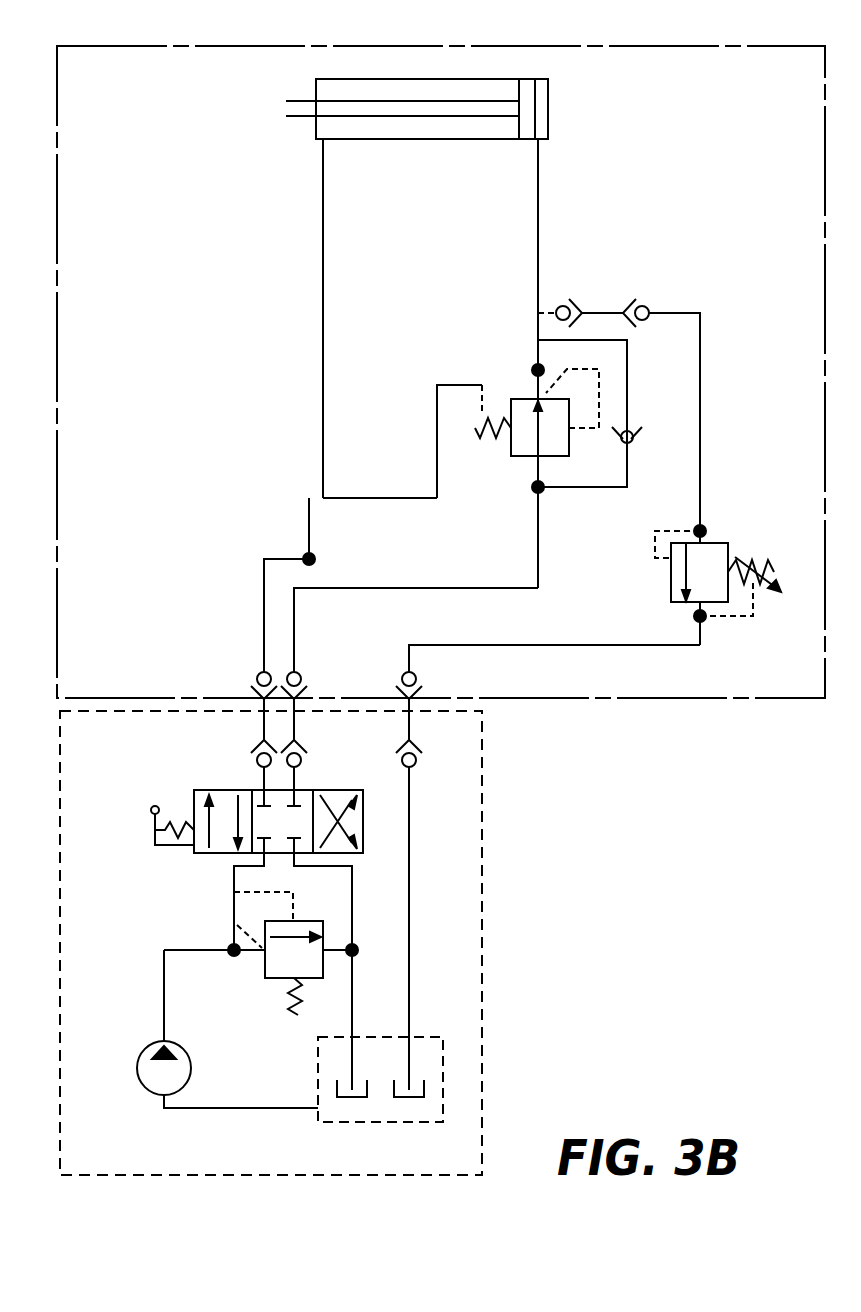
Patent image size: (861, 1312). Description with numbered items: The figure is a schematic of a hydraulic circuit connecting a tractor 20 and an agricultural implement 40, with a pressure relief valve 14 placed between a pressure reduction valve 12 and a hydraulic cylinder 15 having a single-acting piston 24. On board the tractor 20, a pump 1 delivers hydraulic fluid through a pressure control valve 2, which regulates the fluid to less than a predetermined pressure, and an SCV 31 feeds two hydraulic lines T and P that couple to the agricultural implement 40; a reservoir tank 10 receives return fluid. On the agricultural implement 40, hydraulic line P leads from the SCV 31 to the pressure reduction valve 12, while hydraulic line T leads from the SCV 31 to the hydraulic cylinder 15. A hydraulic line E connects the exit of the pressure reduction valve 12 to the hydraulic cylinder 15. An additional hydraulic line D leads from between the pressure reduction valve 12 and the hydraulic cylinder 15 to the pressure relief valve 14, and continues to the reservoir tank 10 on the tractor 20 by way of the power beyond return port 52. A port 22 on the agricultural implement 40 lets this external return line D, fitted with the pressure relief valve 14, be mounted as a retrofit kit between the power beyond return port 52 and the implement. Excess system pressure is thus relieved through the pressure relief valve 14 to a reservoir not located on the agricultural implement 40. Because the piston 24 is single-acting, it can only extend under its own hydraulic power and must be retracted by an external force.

The agricultural implement 40 is at (575, 46).
The tractor 20 is at (60, 1125).
The hydraulic cylinder 15 is at (373, 142).
The single-acting piston 24 is at (541, 110).
The port 22 is at (604, 313).
The pressure reduction valve 12 is at (517, 398).
The pressure relief valve 14 is at (671, 585).
The power beyond return port 52 is at (409, 729).
The SCV 31 is at (212, 854).
The pressure control valve 2 is at (265, 965).
The pump 1 is at (137, 1068).
The reservoir tank 10 is at (443, 1088).
The hydraulic line E is at (539, 228).
The hydraulic line T is at (264, 604).
The hydraulic line P is at (383, 589).
The hydraulic line D is at (540, 646).